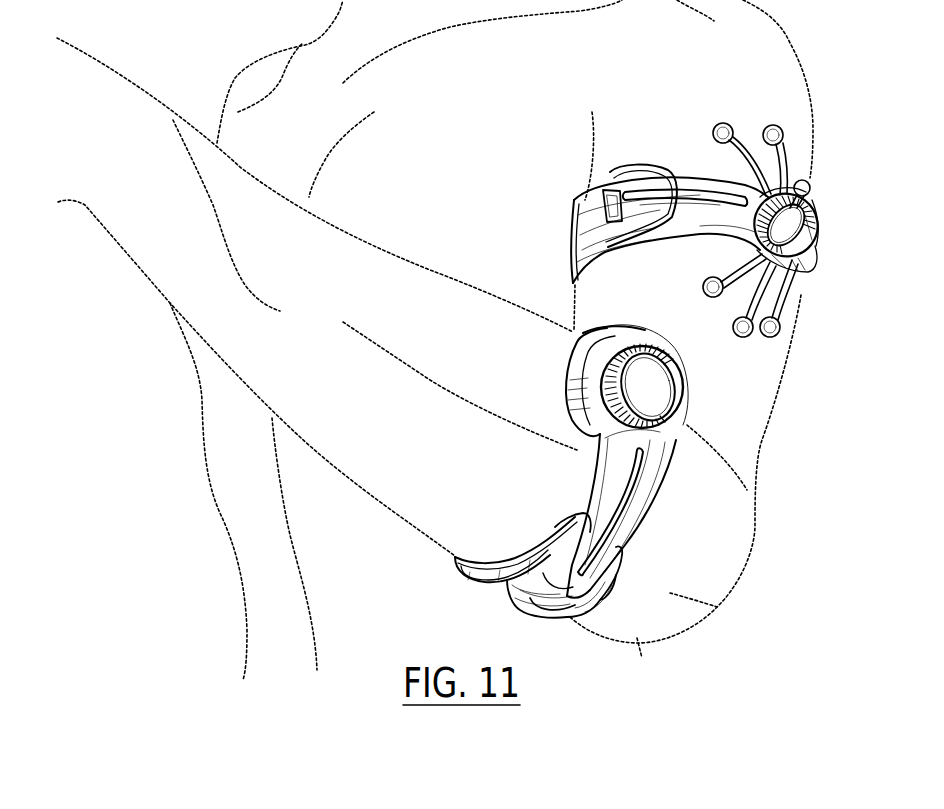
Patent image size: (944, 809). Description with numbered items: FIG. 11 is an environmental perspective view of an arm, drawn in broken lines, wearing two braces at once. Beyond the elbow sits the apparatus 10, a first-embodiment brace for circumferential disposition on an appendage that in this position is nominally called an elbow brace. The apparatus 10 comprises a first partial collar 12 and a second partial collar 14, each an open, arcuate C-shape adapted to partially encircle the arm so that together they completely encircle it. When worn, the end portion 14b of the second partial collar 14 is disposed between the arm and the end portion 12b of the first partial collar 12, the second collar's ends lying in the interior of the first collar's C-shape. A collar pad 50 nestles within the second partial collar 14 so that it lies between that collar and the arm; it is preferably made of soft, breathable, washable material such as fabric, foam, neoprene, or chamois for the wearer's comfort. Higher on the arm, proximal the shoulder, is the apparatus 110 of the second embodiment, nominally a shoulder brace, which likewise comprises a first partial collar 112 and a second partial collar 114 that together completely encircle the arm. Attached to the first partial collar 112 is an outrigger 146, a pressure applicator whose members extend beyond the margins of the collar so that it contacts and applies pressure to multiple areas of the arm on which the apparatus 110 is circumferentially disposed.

The apparatus 10 is at (571, 468).
The first partial collar 12 is at (650, 467).
The end portion of the first partial collar 12b is at (567, 557).
The second partial collar 14 is at (505, 592).
The end portion of the second partial collar 14b is at (600, 578).
The collar pad 50 is at (510, 560).
The apparatus 110 is at (679, 199).
The first partial collar 112 is at (812, 273).
The second partial collar 114 is at (572, 260).
The outrigger 146 is at (747, 243).